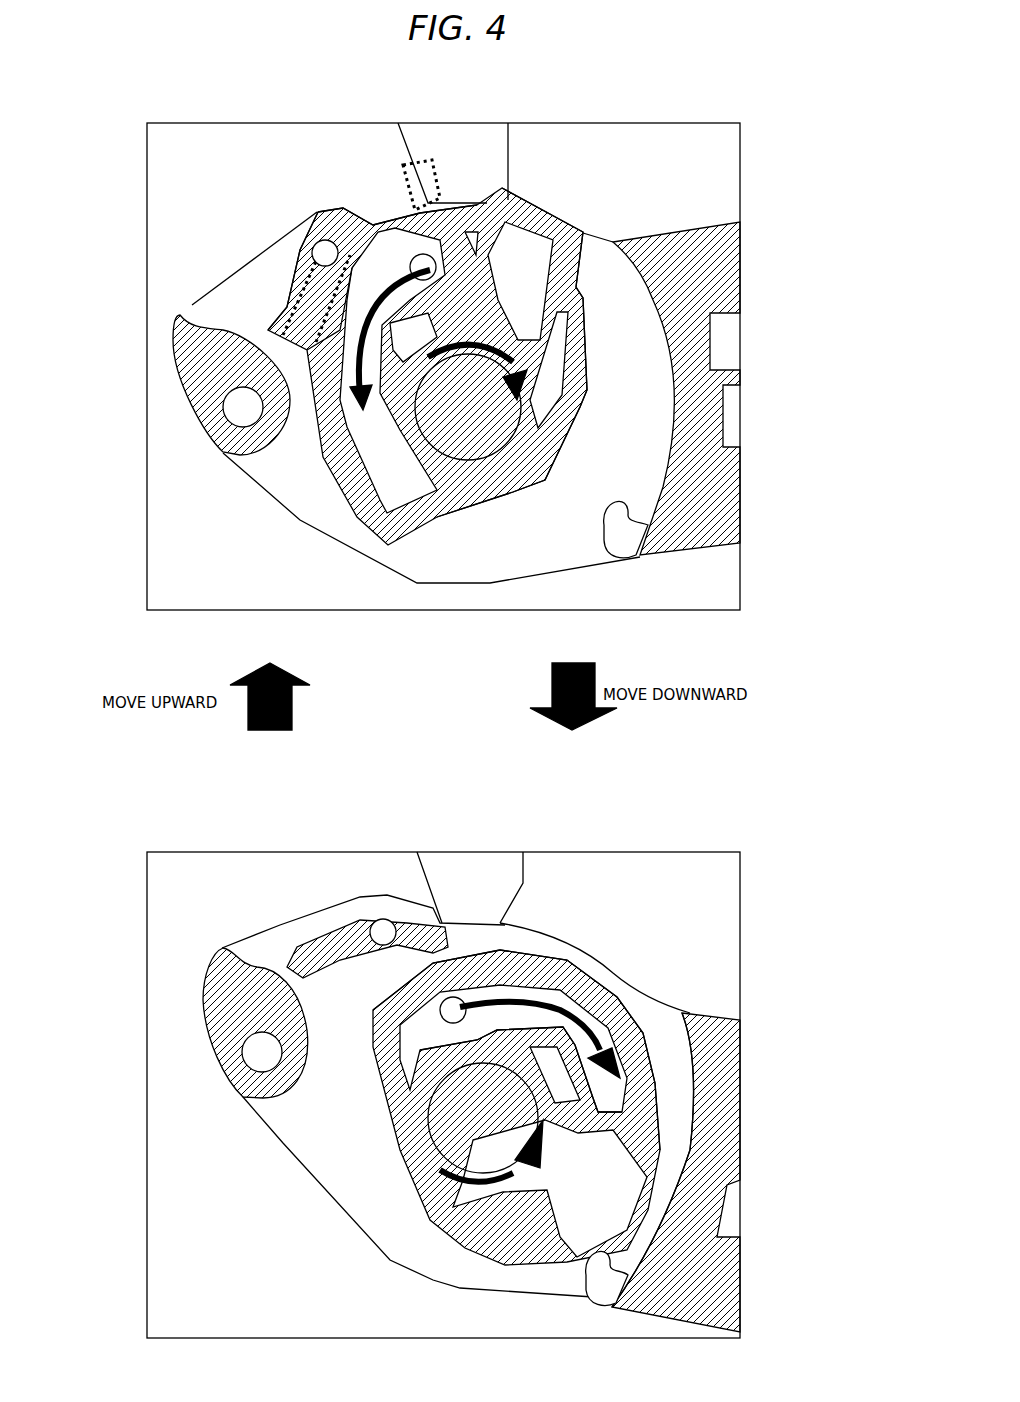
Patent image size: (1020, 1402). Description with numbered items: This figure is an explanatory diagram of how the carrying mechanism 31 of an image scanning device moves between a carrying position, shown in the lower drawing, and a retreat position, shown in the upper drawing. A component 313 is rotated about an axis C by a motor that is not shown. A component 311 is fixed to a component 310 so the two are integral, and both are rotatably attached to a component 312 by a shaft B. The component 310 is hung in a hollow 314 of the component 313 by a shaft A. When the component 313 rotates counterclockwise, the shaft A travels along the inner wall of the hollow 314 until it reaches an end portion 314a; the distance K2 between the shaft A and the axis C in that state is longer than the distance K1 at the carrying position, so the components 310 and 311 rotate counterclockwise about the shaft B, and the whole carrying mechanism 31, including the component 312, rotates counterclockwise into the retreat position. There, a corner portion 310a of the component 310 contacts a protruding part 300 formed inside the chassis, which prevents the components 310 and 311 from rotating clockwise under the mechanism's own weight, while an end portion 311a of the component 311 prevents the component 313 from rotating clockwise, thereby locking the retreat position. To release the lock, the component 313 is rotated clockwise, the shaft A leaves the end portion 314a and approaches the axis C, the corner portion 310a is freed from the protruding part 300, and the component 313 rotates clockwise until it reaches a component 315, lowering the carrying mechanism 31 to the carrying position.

The protruding part 300 is at (441, 681).
The component 310 is at (489, 605).
The corner portion 310a is at (451, 135).
The component 311 is at (346, 522).
The end portion 311a is at (186, 295).
The component 312 is at (175, 649).
The component 313 is at (600, 584).
The hollow 314 is at (575, 760).
The end portion 314a is at (756, 1142).
The component 315 is at (598, 939).
The carrying mechanism 31 is at (461, 712).
The shaft A is at (532, 535).
The shaft B is at (287, 503).
The axis C is at (489, 865).
The distance K1 is at (462, 404).
The distance K2 is at (466, 393).